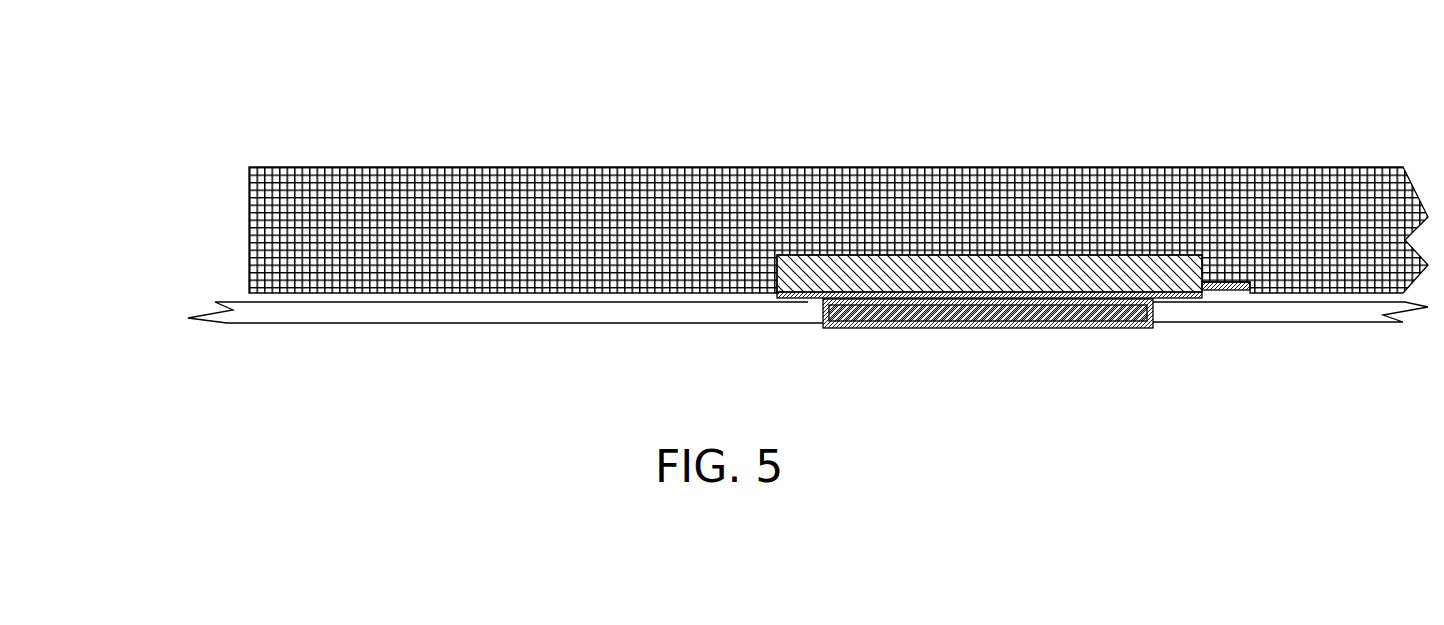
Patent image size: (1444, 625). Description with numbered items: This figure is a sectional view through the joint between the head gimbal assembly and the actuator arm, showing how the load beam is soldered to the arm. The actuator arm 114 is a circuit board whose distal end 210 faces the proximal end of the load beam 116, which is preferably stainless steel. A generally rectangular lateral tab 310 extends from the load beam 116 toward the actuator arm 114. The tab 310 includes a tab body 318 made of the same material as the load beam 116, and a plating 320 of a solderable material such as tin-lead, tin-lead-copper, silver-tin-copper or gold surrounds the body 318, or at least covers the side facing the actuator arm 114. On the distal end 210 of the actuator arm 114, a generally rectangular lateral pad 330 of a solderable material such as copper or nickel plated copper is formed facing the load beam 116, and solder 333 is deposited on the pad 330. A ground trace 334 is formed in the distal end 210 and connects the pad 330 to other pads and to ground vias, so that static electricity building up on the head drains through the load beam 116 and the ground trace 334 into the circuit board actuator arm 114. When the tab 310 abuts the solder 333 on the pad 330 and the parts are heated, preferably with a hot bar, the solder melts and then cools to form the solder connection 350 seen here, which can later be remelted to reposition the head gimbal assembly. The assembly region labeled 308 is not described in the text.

The distal end 210 is at (779, 165).
The actuator arm 114 is at (226, 236).
The load beam 116 is at (180, 312).
The solder connection 350 is at (800, 313).
The lateral pad 330 is at (1173, 280).
The solder 333 is at (1200, 298).
The ground trace 334 is at (1247, 285).
The lateral tab 310 is at (988, 364).
The plating 320 is at (872, 328).
The tab body 318 is at (930, 328).
The sensor module 308 is at (766, 361).